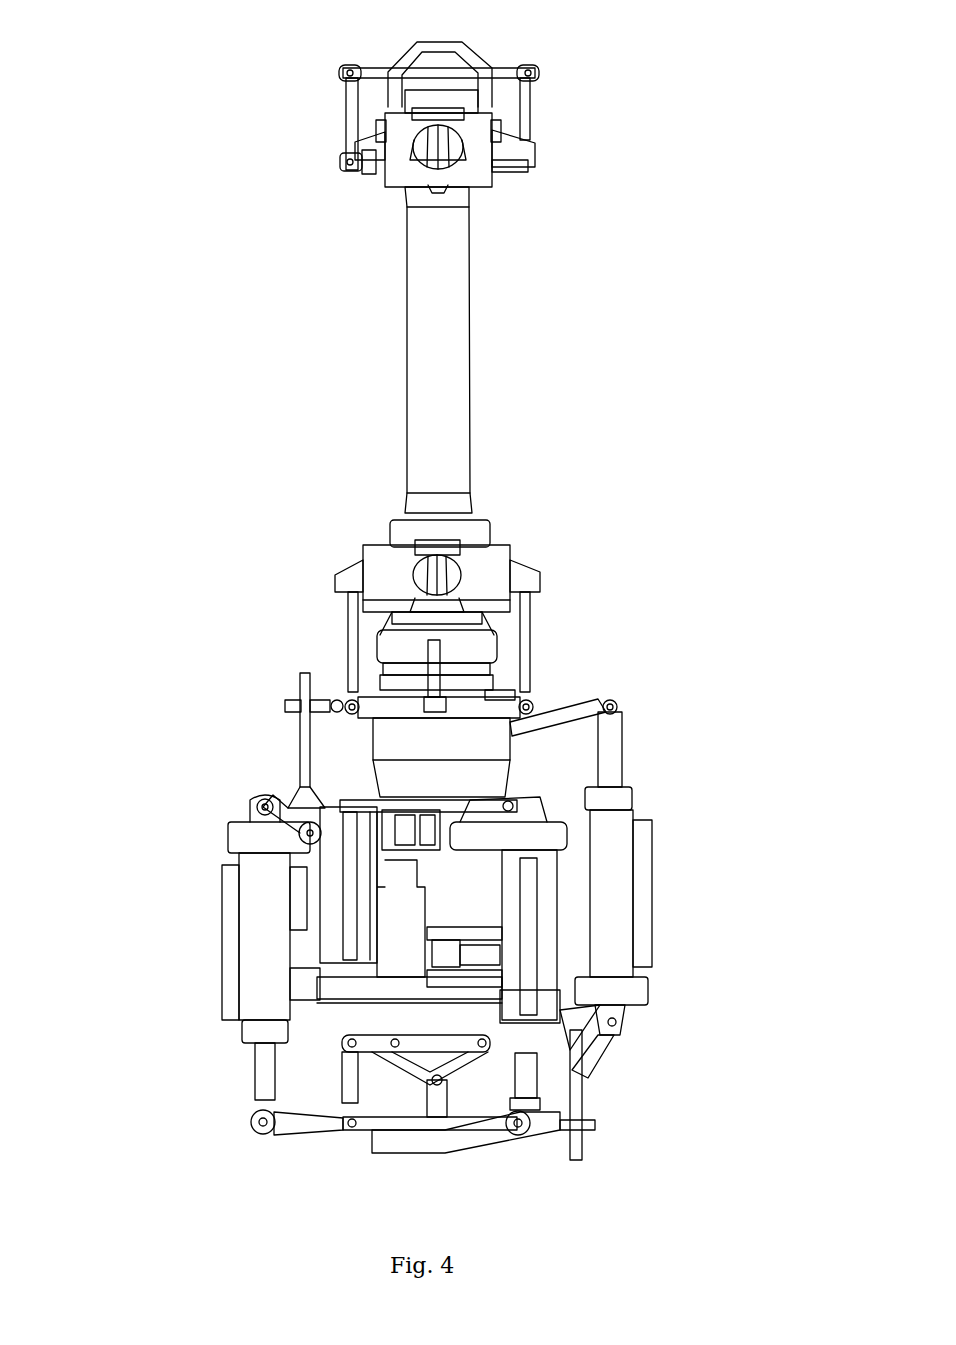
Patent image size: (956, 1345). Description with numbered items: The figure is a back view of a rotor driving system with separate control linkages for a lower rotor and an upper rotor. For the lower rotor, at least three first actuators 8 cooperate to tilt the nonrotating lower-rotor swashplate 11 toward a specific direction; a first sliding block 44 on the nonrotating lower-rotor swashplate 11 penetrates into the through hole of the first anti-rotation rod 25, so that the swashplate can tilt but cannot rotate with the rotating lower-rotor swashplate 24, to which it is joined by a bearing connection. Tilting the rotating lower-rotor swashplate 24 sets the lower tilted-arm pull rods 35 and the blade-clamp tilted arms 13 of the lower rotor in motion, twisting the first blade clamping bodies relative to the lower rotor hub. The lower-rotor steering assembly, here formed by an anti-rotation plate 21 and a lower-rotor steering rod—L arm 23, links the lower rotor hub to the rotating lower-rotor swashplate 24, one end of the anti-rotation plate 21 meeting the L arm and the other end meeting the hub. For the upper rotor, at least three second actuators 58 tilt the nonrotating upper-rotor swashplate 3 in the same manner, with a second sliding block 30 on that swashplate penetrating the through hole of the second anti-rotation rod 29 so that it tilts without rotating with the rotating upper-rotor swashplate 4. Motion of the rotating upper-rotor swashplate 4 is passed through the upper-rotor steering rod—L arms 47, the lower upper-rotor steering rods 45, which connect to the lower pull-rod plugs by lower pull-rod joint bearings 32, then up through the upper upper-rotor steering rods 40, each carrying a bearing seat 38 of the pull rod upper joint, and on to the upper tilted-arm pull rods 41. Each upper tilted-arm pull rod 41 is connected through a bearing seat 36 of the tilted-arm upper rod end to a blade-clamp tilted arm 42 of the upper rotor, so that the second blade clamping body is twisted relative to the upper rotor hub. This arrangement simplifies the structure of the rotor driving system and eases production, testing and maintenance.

The nonrotating upper-rotor swashplate 3 is at (347, 1097).
The rotating upper-rotor swashplate 4 is at (416, 1119).
The first actuator 8 is at (682, 873).
The nonrotating lower-rotor swashplate 11 is at (600, 657).
The blade-clamp tilted arm of the lower rotor 13 is at (433, 513).
The anti-rotation plate 21 is at (318, 554).
The lower-rotor steering rod—L arm 23 is at (282, 658).
The rotating lower-rotor swashplate 24 is at (546, 649).
The first anti-rotation rod 25 is at (220, 763).
The second anti-rotation rod 29 is at (651, 1058).
The second sliding block 30 is at (652, 1108).
The lower pull-rod joint bearing 32 is at (417, 1132).
The lower tilted-arm pull rod 35 is at (413, 591).
The bearing seat of tilted-arm upper rod end 36 is at (429, 169).
The bearing seat of pull rod upper joint 38 is at (330, 175).
The upper upper-rotor steering rod 40 is at (434, 46).
The upper tilted-arm pull rod 41 is at (434, 166).
The blade-clamp tilted arm of the upper rotor 42 is at (463, 225).
The first sliding block 44 is at (225, 727).
The lower upper-rotor steering rod 45 is at (443, 1113).
The upper-rotor steering rod—L arm 47 is at (227, 1073).
The second actuator 58 is at (190, 932).